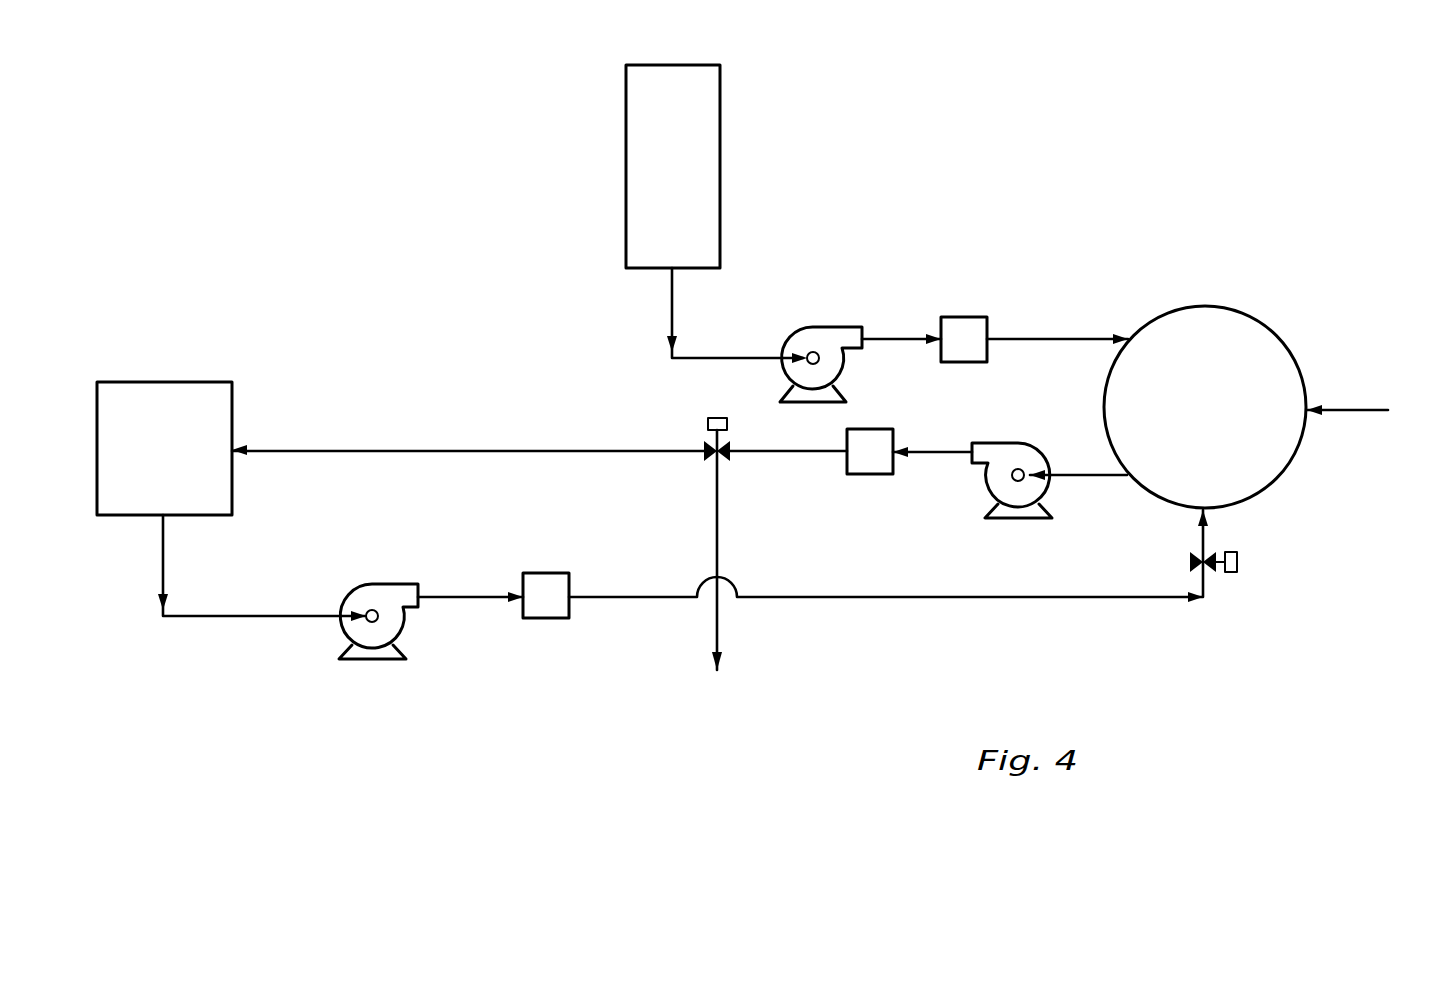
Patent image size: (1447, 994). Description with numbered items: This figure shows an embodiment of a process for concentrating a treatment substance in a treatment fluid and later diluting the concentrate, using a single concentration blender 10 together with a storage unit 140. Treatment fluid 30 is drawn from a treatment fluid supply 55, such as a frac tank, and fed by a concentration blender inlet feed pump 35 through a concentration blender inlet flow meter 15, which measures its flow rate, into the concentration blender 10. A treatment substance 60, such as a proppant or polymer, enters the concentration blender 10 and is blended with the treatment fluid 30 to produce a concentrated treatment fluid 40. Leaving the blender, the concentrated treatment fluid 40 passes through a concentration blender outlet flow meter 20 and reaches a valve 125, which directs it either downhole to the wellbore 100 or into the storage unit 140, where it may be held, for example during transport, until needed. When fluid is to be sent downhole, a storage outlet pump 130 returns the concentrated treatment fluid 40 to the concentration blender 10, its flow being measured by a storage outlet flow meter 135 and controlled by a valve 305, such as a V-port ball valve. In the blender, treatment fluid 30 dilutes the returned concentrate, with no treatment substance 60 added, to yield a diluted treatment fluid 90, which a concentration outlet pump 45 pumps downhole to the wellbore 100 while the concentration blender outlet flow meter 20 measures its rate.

The concentration blender 10 is at (1217, 307).
The concentration blender inlet flow meter 15 is at (965, 317).
The concentration blender outlet flow meter 20 is at (872, 474).
The treatment fluid 30 is at (672, 308).
The concentration blender inlet feed pump 35 is at (827, 327).
The concentrated treatment fluid 40 is at (370, 447).
The concentration outlet pump 45 is at (990, 443).
The treatment fluid supply 55 is at (720, 128).
The treatment substance 60 is at (1348, 410).
The diluted treatment fluid 90 is at (717, 490).
The wellbore 100 is at (715, 706).
The valve 125 is at (712, 418).
The storage outlet pump 130 is at (390, 584).
The storage outlet flow meter 135 is at (548, 573).
The storage unit 140 is at (170, 382).
The valve 305 is at (1250, 610).